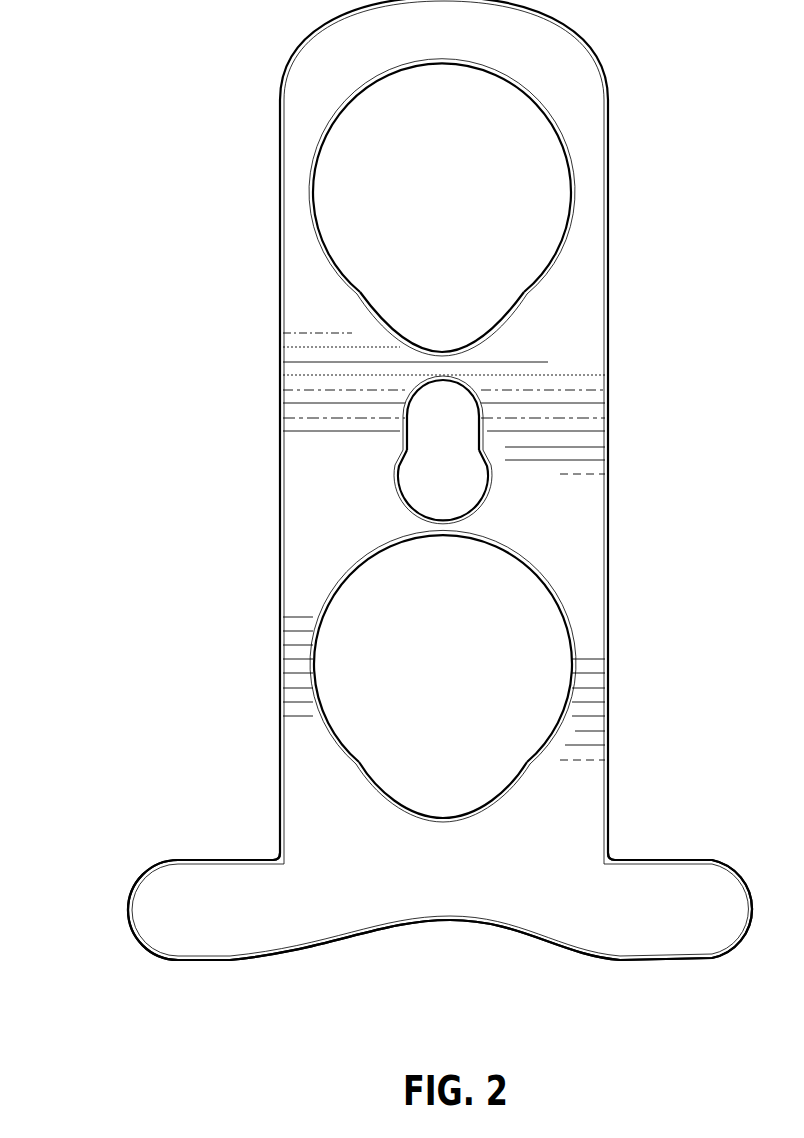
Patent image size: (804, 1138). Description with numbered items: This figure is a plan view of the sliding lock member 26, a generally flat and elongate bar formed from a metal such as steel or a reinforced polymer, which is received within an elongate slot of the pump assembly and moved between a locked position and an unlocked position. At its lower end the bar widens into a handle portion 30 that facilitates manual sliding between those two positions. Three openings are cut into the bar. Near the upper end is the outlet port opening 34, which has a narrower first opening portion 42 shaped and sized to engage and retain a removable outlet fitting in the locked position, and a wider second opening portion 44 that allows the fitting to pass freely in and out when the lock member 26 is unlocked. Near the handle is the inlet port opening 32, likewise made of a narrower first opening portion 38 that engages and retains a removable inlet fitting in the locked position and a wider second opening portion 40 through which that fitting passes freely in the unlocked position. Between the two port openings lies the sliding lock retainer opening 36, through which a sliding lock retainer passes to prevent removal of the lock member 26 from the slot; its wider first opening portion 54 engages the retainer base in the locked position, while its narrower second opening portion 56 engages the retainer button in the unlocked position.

The sliding lock member 26 is at (148, 277).
The handle portion 30 is at (620, 961).
The inlet port opening 32 is at (388, 677).
The outlet port opening 34 is at (388, 200).
The sliding lock retainer opening 36 is at (452, 437).
The first opening portion 38 is at (510, 790).
The second opening portion 40 is at (542, 576).
The first opening portion 42 is at (493, 300).
The second opening portion 44 is at (523, 123).
The first opening portion 54 is at (400, 478).
The second opening portion 56 is at (410, 392).